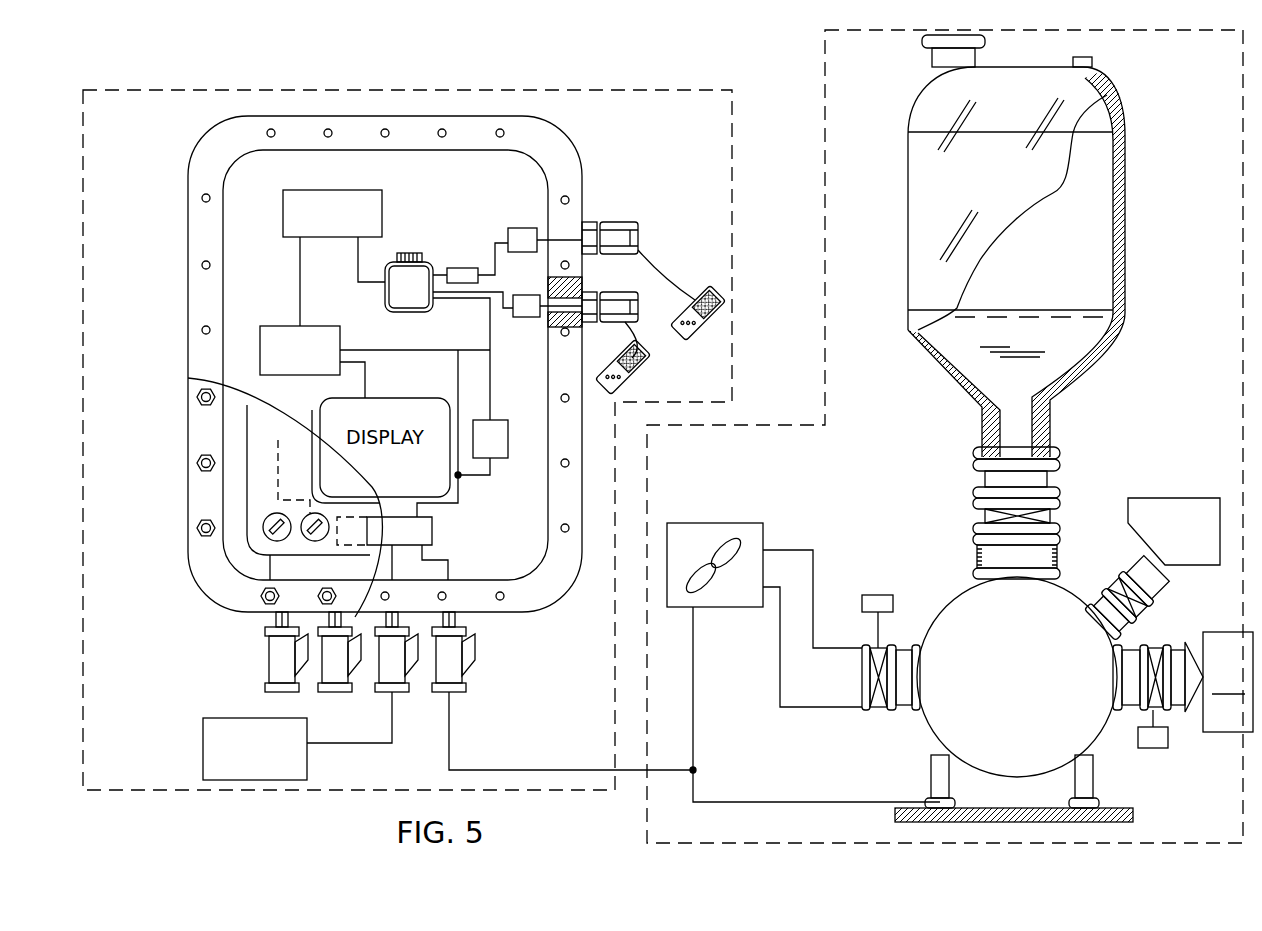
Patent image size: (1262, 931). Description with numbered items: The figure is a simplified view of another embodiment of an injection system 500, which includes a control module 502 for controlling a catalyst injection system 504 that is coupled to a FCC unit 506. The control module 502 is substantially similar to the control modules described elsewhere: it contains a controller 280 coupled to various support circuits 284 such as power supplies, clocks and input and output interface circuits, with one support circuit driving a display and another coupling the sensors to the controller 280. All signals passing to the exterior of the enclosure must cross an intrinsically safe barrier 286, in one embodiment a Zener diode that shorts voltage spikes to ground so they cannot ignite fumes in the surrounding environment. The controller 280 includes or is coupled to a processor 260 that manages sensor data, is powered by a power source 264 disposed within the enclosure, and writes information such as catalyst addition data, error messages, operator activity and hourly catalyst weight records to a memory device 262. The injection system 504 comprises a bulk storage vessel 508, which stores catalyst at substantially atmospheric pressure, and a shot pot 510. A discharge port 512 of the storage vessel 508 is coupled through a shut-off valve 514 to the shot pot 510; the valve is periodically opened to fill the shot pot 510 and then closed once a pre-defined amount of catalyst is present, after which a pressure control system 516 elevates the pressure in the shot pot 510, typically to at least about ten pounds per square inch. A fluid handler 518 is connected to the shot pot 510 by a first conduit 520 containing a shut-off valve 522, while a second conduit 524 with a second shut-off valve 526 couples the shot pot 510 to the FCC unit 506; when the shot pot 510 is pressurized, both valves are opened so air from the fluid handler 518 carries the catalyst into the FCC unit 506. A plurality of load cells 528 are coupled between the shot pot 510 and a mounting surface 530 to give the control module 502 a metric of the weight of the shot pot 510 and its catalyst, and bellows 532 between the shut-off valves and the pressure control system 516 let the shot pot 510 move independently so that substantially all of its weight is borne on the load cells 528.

The system 500 is at (355, 70).
The control module 502 is at (628, 90).
The catalyst injection system 504 is at (822, 205).
The FCC unit 506 is at (1228, 682).
The bulk storage vessel 508 is at (1130, 193).
The shot pot 510 is at (922, 602).
The discharge port 512 is at (1057, 440).
The shut-off valve 514 is at (1063, 510).
The pressure control system 516 is at (1180, 498).
The fluid handler 518 is at (700, 523).
The first conduit 520 is at (838, 712).
The shut-off valve 522 is at (872, 595).
The second conduit 524 is at (1170, 712).
The second shut-off valve 526 is at (1155, 645).
The load cells 528 is at (962, 800).
The mounting surface 530 is at (1132, 803).
The bellows 532 is at (977, 552).
The controller 280 is at (310, 190).
The support circuits 284 is at (312, 335).
The intrinsically safe barrier 286 is at (525, 228).
The processor 260 is at (405, 295).
The memory device 262 is at (408, 253).
The power source 264 is at (505, 445).